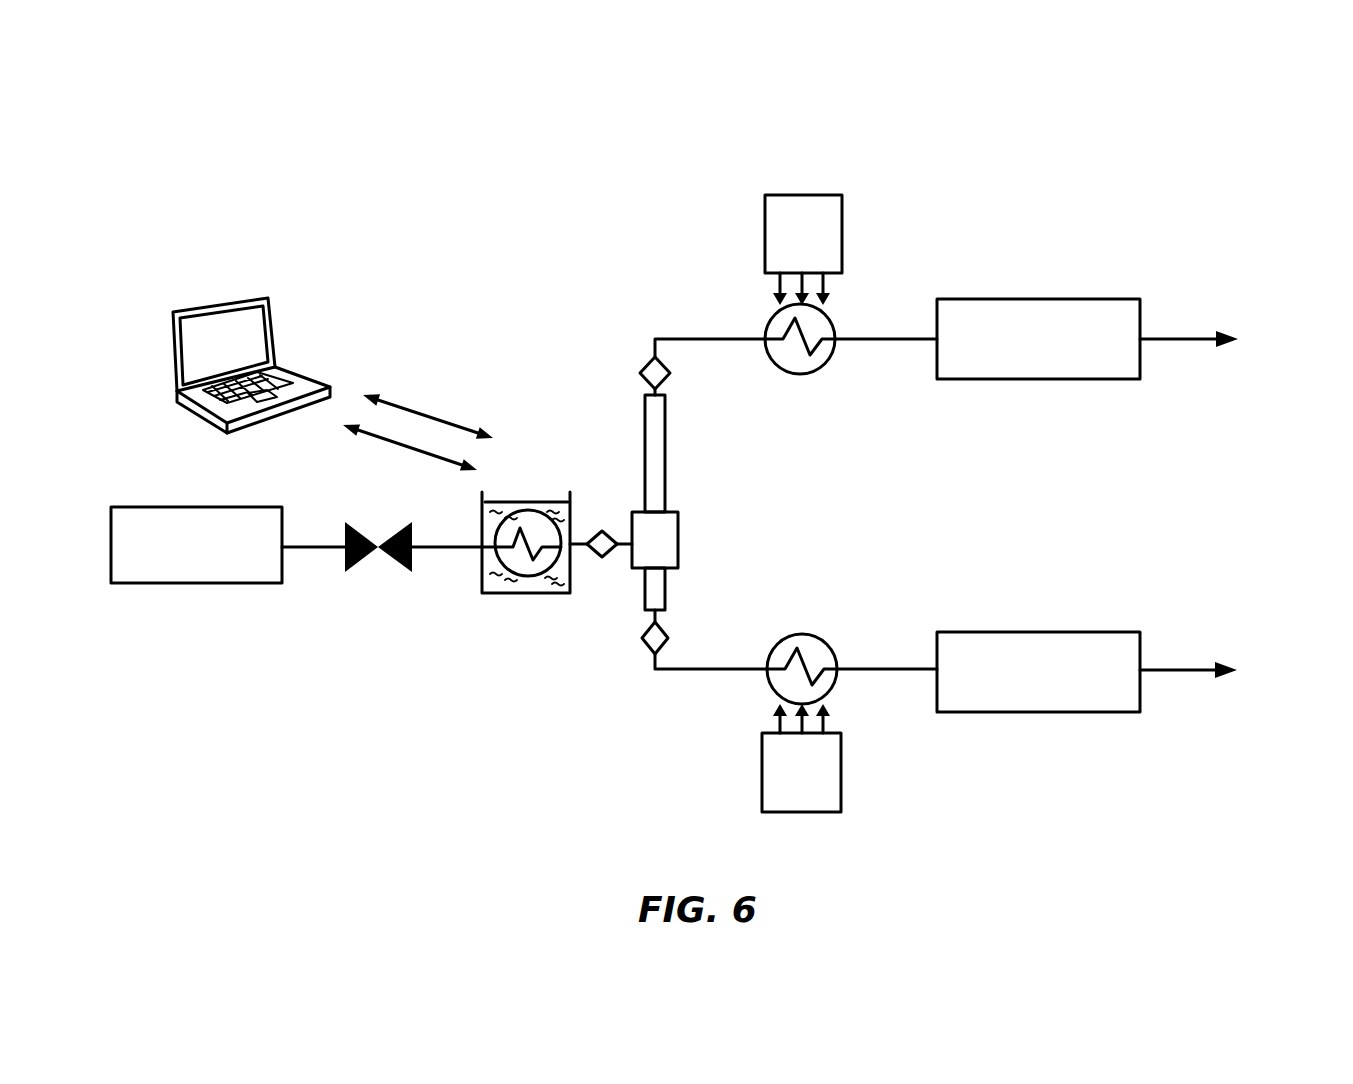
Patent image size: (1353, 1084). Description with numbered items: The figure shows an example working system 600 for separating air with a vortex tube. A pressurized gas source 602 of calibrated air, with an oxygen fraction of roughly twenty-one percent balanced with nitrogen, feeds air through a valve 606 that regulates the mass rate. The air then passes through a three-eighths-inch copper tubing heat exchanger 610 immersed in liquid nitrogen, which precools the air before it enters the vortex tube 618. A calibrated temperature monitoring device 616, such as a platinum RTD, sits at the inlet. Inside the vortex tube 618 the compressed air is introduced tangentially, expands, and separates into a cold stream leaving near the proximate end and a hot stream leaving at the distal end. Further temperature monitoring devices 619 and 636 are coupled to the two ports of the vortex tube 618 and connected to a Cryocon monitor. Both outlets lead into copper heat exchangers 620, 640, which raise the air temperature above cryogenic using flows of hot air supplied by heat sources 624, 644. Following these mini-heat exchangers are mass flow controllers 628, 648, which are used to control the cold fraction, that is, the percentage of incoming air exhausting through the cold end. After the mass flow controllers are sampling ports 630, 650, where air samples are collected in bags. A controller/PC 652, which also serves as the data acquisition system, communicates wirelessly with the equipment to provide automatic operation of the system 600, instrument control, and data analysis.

The system 600 is at (305, 150).
The pressurized gas source 602 is at (202, 580).
The valve 606 is at (403, 567).
The copper tubing heat exchanger 610 is at (547, 588).
The temperature monitoring device 616 is at (608, 530).
The vortex tube 618 is at (712, 531).
The temperature monitoring device 619 is at (660, 632).
The copper heat exchanger 620 is at (822, 637).
The heat source 624 is at (781, 791).
The mass flow controller 628 is at (1018, 684).
The sampling port 630 is at (1215, 673).
The temperature monitoring device 636 is at (663, 382).
The copper heat exchanger 640 is at (820, 367).
The heat source 644 is at (783, 246).
The mass flow controller 648 is at (1018, 352).
The sampling port 650 is at (1216, 340).
The controller/PC 652 is at (243, 300).